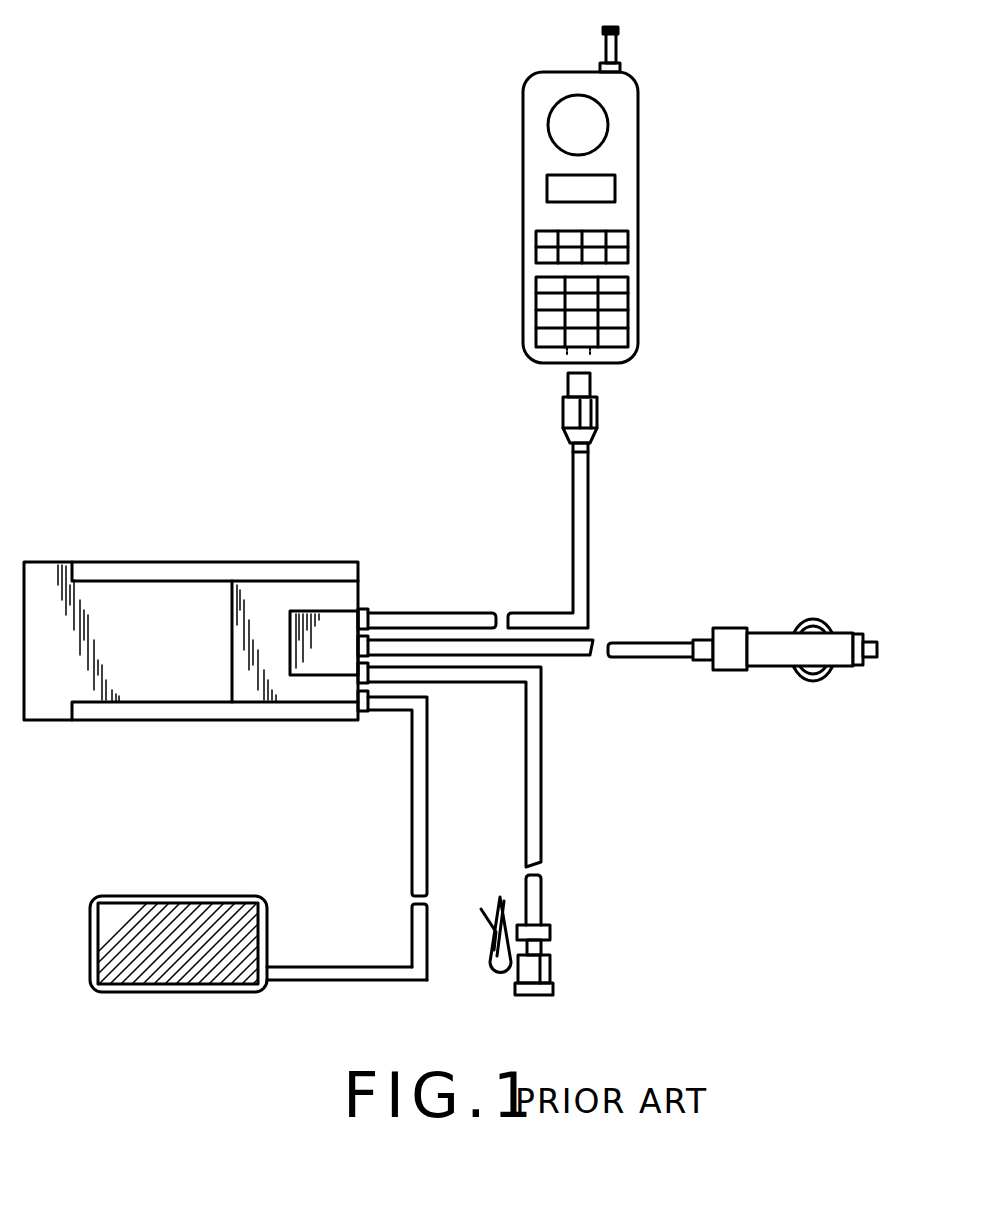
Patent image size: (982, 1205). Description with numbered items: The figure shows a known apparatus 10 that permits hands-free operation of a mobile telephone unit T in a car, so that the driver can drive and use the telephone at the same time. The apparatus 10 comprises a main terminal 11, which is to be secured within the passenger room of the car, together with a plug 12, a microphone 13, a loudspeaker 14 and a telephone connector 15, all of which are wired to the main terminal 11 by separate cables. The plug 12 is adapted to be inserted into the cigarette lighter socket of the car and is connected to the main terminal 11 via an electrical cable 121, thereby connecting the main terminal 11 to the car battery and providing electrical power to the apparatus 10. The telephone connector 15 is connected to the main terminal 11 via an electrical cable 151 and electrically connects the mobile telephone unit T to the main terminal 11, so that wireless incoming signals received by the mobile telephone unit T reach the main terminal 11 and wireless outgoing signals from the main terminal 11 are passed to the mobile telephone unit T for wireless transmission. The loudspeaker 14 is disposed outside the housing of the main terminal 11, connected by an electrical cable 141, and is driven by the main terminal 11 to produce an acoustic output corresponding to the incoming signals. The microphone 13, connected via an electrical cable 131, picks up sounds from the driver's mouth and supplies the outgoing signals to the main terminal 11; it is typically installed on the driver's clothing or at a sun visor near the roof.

The mobile telephone unit T is at (640, 170).
The apparatus 10 is at (234, 456).
The main terminal 11 is at (52, 570).
The plug 12 is at (776, 645).
The electrical cable 121 is at (658, 643).
The microphone 13 is at (542, 968).
The electrical cable 131 is at (535, 798).
The loudspeaker 14 is at (268, 900).
The electrical cable 141 is at (418, 800).
The telephone connector 15 is at (597, 418).
The electrical cable 151 is at (580, 500).